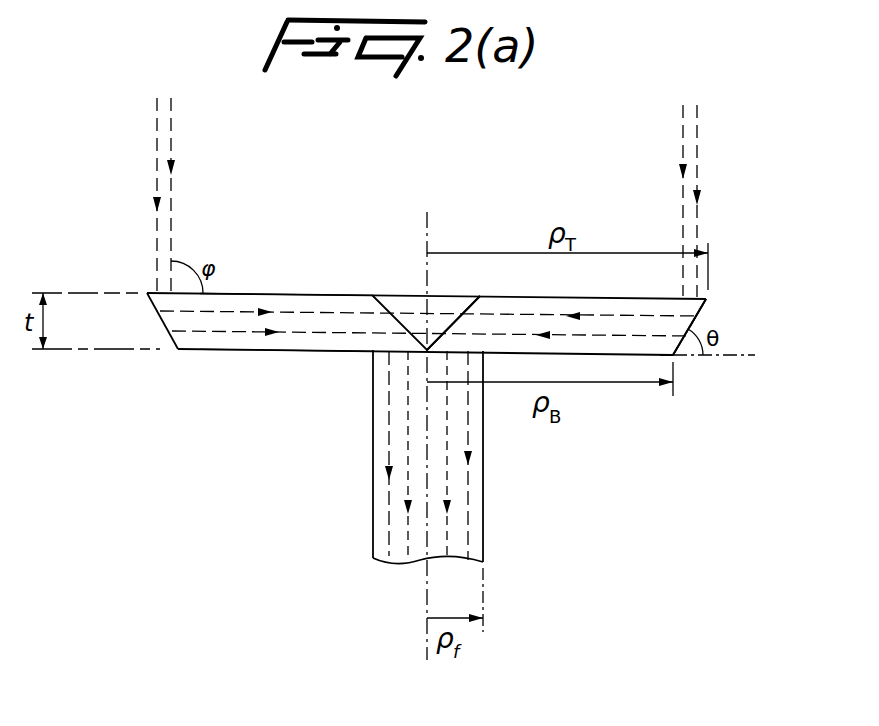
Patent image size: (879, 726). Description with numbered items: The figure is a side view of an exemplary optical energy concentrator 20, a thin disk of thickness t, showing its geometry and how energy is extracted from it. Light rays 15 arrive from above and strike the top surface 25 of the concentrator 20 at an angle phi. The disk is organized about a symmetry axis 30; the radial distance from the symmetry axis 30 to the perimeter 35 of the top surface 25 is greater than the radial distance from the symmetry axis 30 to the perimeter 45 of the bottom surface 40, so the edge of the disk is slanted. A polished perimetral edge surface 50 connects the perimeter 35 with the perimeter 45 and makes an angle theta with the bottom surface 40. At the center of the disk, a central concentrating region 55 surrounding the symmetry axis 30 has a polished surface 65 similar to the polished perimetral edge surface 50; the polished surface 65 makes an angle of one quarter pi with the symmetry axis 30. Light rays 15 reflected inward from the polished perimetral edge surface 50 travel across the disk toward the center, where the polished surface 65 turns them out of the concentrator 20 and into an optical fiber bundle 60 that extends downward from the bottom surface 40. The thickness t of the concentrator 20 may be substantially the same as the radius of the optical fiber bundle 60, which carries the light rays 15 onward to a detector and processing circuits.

The light rays 15 is at (150, 217).
The optical energy concentrator 20 is at (322, 236).
The top surface 25 is at (257, 293).
The symmetry axis 30 is at (432, 236).
The perimeter of top surface 35 is at (706, 299).
The bottom surface 40 is at (255, 352).
The perimeter of bottom surface 45 is at (675, 358).
The polished perimetral edge surface 50 is at (706, 306).
The central concentrating region 55 is at (396, 285).
The optical fiber bundle 60 is at (485, 510).
The polished surface 65 is at (460, 318).